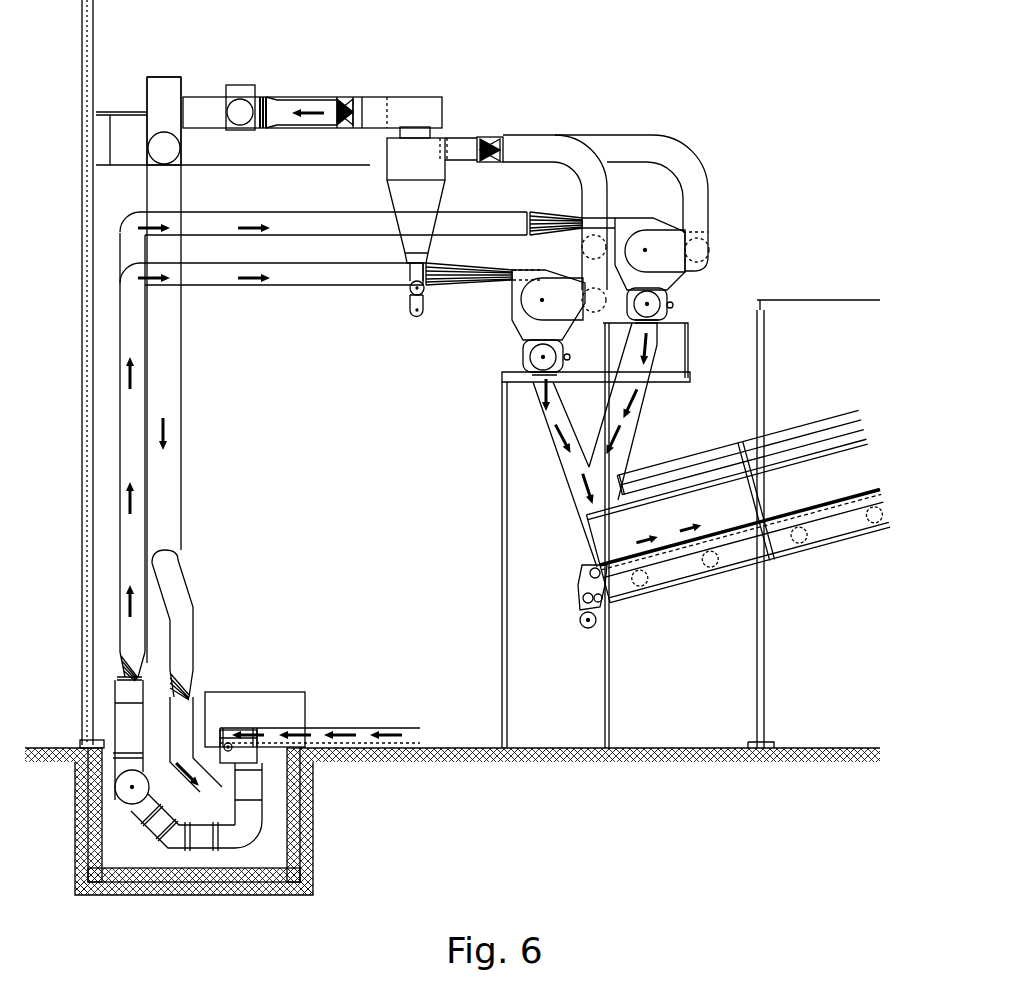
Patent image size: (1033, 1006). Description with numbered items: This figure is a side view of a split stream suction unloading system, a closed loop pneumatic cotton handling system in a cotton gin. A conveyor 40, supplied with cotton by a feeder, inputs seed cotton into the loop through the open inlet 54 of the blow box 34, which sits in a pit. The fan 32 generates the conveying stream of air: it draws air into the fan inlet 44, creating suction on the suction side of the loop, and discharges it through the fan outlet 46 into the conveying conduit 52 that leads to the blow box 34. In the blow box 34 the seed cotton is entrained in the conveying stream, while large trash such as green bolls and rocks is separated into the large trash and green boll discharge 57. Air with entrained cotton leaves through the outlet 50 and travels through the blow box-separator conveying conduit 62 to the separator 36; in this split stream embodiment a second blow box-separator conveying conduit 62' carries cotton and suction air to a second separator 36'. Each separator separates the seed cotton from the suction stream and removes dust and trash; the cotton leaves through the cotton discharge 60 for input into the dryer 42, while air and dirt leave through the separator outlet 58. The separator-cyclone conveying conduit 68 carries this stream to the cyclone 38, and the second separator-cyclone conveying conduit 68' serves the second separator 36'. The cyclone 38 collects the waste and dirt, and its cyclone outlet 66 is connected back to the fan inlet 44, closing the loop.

The fan 32 is at (177, 141).
The blow box 34 is at (275, 843).
The separator 36 is at (520, 321).
The second separator 36' is at (698, 249).
The cyclone 38 is at (410, 168).
The conveyor 40 is at (318, 747).
The dryer 42 is at (583, 540).
The fan inlet 44 is at (203, 103).
The fan outlet 46 is at (168, 200).
The outlet 50 is at (150, 766).
The conveying conduit 52 is at (183, 447).
The open inlet 54 is at (212, 747).
The large trash and green boll discharge 57 is at (175, 822).
The separator outlet 58 is at (597, 310).
The cotton discharge 60 is at (545, 402).
The blow box-separator conveying conduit 62 is at (285, 496).
The second blow box-separator conveying conduit 62' is at (367, 205).
The cyclone outlet 66 is at (386, 99).
The separator-cyclone conveying conduit 68 is at (581, 212).
The second separator-cyclone conveying conduit 68' is at (649, 187).